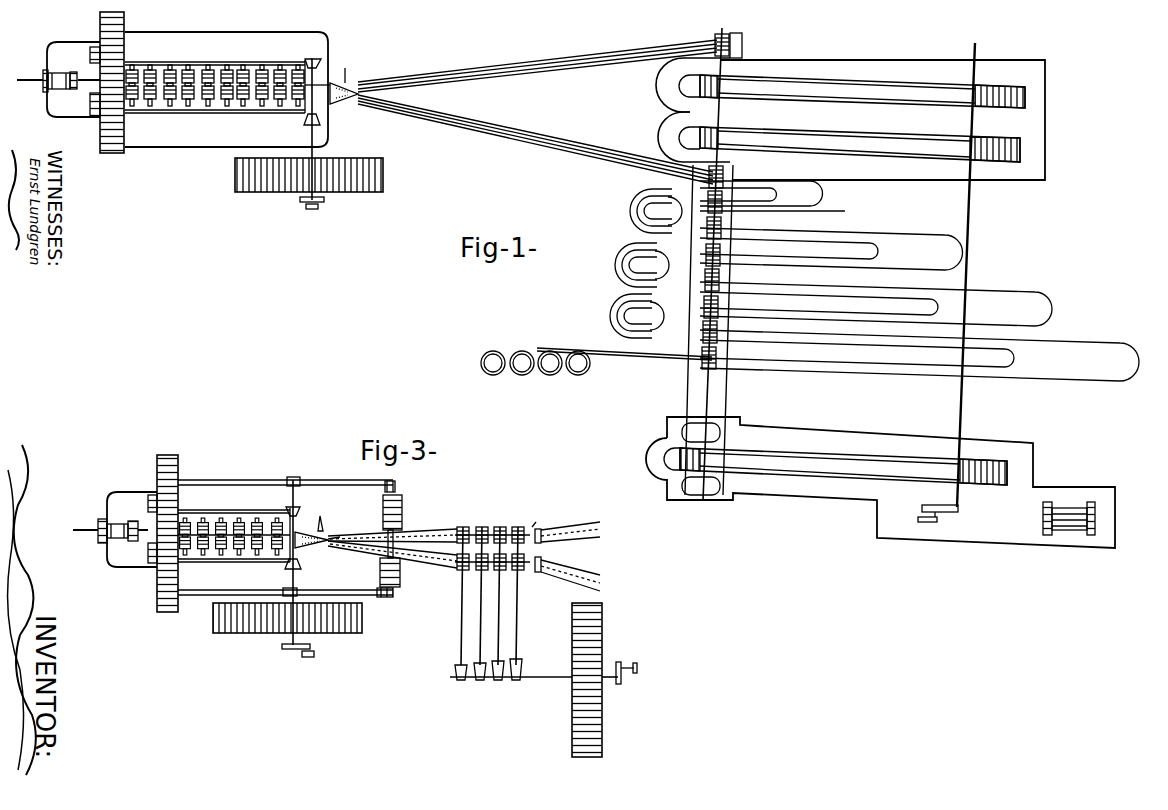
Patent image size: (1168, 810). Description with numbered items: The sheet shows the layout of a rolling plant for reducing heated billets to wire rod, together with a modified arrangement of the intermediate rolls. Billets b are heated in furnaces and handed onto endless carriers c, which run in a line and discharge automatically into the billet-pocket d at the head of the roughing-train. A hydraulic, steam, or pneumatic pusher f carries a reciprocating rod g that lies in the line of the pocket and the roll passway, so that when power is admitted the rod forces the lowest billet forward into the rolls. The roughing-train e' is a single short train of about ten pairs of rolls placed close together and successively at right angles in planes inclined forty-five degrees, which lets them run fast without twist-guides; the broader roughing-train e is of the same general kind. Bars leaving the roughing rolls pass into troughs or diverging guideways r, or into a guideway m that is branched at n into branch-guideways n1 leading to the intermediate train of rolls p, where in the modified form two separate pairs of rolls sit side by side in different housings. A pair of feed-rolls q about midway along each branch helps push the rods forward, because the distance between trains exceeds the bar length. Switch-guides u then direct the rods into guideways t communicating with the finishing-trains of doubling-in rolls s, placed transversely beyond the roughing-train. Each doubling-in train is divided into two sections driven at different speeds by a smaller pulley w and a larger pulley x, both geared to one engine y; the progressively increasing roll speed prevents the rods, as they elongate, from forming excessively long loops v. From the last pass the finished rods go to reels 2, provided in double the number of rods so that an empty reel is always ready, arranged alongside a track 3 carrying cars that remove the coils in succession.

In FIG. 1, the endless carrier c is at (124, 17).
In FIG. 3, the endless carrier c is at (178, 462).
In FIG. 1, the billet b is at (93, 50).
In FIG. 3, the billet b is at (170, 540).
In FIG. 1, the billet-pocket d is at (98, 99).
In FIG. 3, the billet-pocket d is at (158, 514).
In FIG. 1, the pusher f is at (45, 92).
In FIG. 3, the pusher f is at (100, 543).
In FIG. 1, the reciprocating rod g is at (84, 84).
In FIG. 3, the reciprocating rod g is at (140, 544).
In FIG. 1, the roughing-train of rolls e' is at (215, 100).
In FIG. 3, the roughing-train of rolls e is at (231, 551).
In FIG. 1, the branch n is at (343, 105).
In FIG. 3, the branch n is at (323, 546).
In FIG. 3, the guideway m is at (302, 549).
In FIG. 3, the branch-guideway n1 is at (346, 556).
In FIG. 1, the trough r is at (537, 112).
In FIG. 1, the finishing-train of doubling-in rolls s is at (735, 44).
In FIG. 1, the driving-pulley w is at (1027, 97).
In FIG. 1, the loop v is at (835, 192).
In FIG. 1, the track 3 is at (646, 263).
In FIG. 1, the reel 2 is at (586, 372).
In FIG. 1, the driving-pulley x is at (1010, 470).
In FIG. 1, the engine y is at (1071, 532).
In FIG. 3, the feed-rolls q is at (434, 534).
In FIG. 3, the intermediate train of rolls p is at (516, 524).
In FIG. 3, the switch-guide u is at (537, 548).
In FIG. 3, the guideway t is at (576, 556).